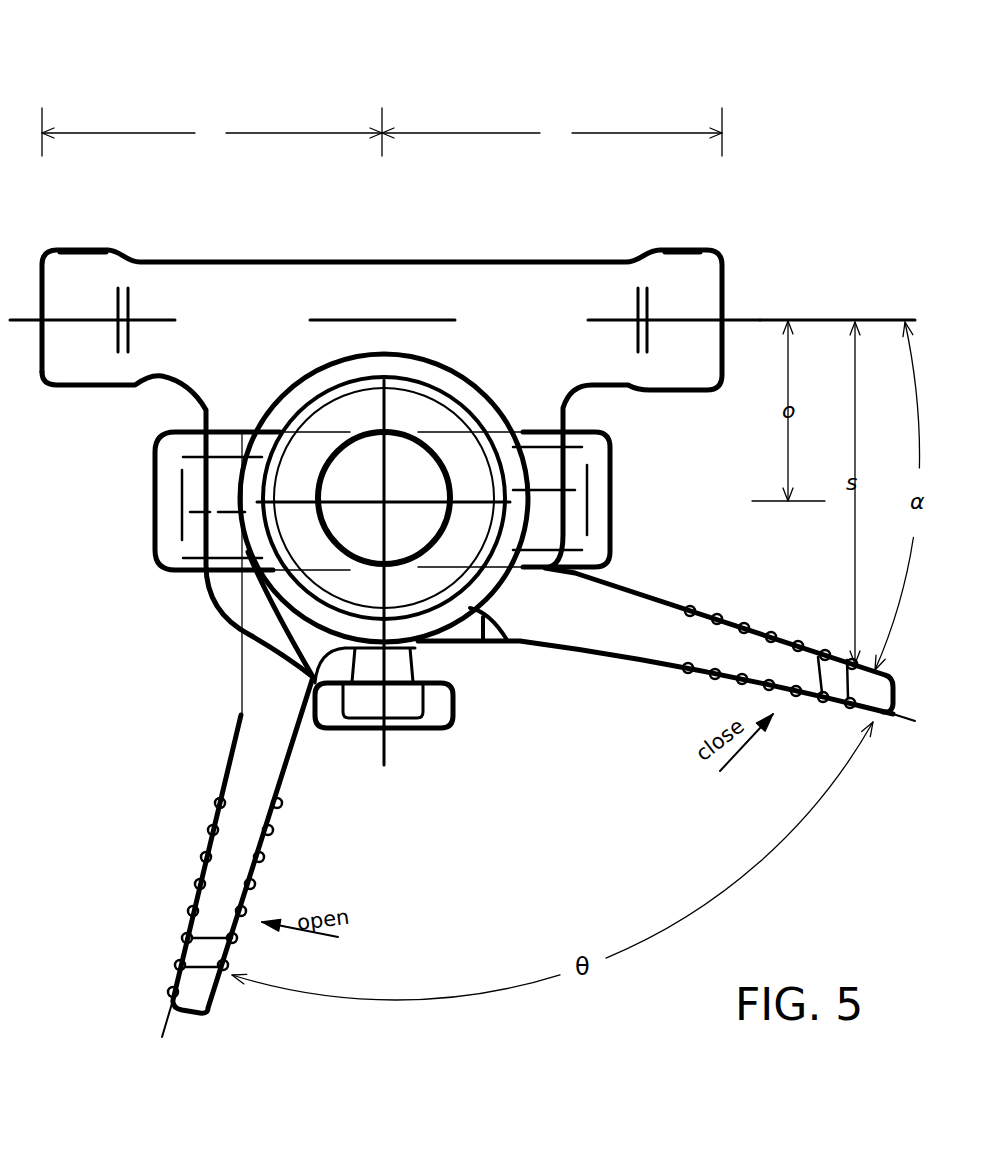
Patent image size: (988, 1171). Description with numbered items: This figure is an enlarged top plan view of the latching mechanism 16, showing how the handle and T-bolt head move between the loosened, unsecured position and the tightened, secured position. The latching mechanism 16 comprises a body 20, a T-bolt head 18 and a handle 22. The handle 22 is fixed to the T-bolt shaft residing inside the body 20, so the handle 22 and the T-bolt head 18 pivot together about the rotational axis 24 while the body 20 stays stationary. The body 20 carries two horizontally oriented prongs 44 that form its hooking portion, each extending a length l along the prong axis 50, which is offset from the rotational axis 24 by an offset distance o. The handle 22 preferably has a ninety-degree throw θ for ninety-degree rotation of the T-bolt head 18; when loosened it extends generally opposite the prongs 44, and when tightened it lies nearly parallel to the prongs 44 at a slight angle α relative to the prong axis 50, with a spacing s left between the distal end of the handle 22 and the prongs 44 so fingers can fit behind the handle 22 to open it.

The latching mechanism 16 is at (382, 88).
The T-bolt head 18 is at (598, 500).
The body 20 is at (210, 381).
The handle 22 is at (690, 630).
The rotational axis 24 is at (384, 502).
The horizontally oriented prongs 44 is at (93, 265).
The prong axis 50 is at (768, 318).